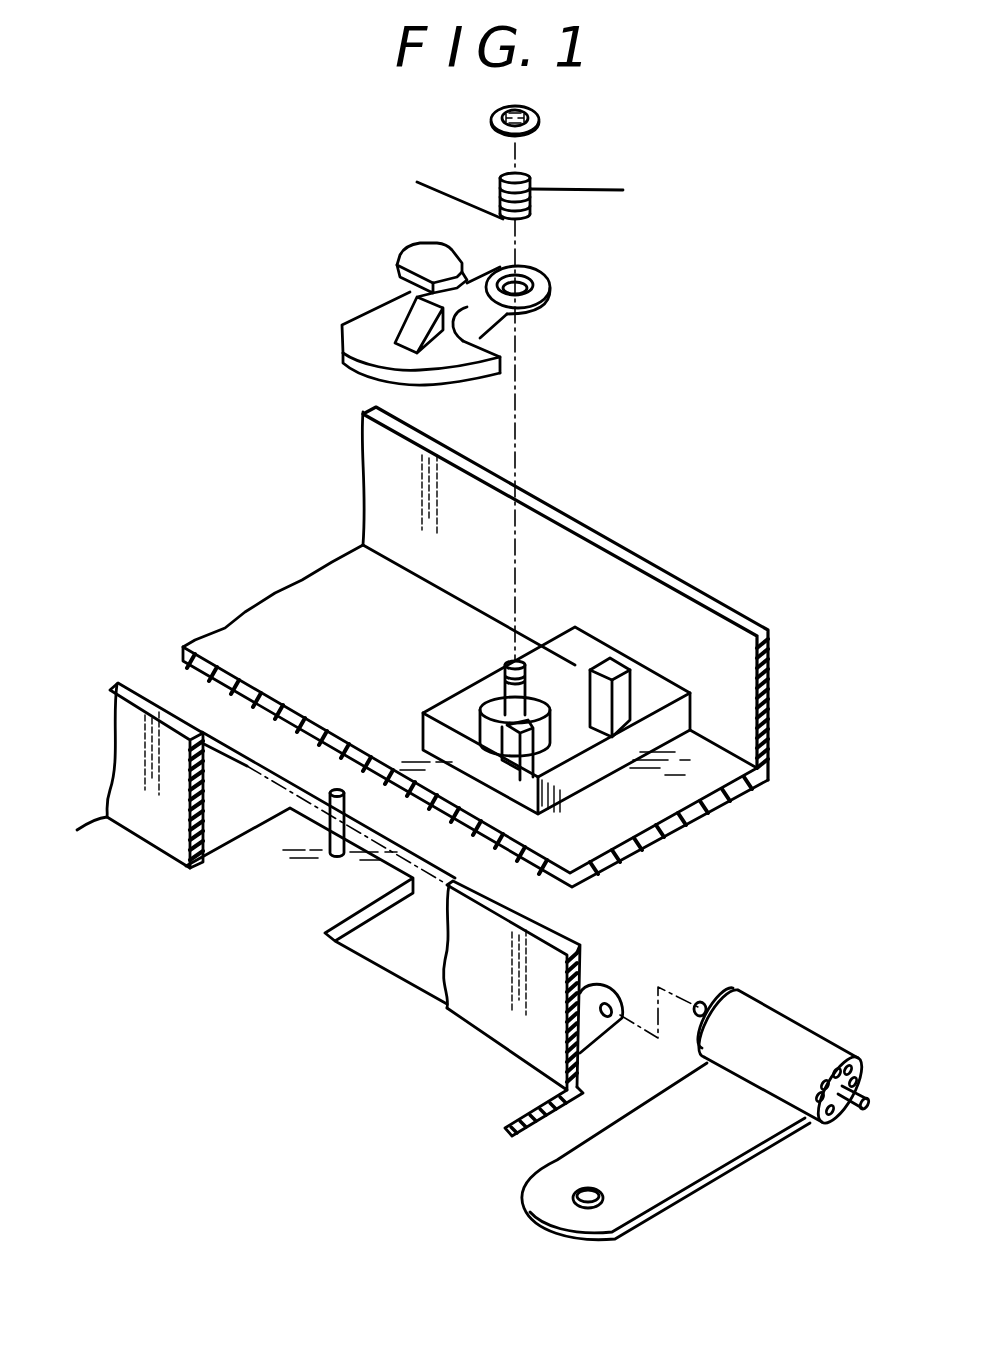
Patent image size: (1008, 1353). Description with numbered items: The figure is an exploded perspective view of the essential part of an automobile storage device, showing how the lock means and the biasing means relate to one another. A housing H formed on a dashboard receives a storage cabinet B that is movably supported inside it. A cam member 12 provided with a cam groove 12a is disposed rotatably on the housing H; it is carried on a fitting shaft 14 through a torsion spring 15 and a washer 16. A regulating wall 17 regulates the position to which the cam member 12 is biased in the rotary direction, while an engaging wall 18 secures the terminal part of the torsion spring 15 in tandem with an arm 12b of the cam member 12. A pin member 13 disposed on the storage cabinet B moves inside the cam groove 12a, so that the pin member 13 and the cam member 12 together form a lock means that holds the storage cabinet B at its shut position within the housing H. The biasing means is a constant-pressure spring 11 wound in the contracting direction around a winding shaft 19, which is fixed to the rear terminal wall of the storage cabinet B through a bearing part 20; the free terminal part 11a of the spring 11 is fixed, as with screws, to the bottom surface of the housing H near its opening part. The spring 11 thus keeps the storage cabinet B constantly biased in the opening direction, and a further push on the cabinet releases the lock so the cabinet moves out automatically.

The washer 16 is at (540, 121).
The torsion spring 15 is at (531, 220).
The cam member 12 is at (357, 329).
The arm of the cam member 12b is at (423, 252).
The cam groove 12a is at (502, 342).
The housing H is at (603, 580).
The engaging wall 18 is at (622, 690).
The fitting shaft 14 is at (500, 662).
The regulating wall 17 is at (527, 750).
The storage cabinet B is at (133, 717).
The pin member 13 is at (330, 808).
The bearing part 20 is at (600, 990).
The constant-pressure spring 11 is at (763, 1024).
The winding shaft 19 is at (833, 1107).
The free terminal part of the spring 11a is at (546, 1208).